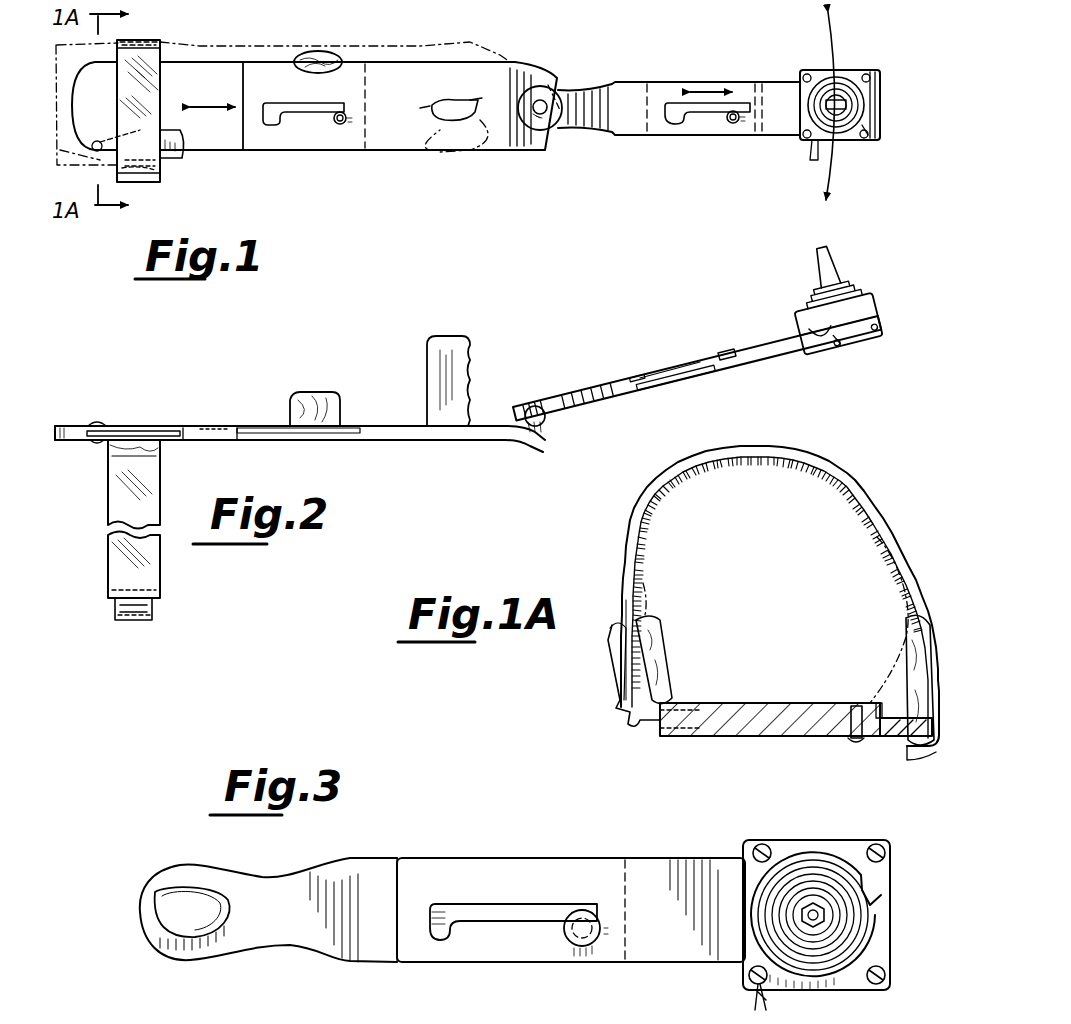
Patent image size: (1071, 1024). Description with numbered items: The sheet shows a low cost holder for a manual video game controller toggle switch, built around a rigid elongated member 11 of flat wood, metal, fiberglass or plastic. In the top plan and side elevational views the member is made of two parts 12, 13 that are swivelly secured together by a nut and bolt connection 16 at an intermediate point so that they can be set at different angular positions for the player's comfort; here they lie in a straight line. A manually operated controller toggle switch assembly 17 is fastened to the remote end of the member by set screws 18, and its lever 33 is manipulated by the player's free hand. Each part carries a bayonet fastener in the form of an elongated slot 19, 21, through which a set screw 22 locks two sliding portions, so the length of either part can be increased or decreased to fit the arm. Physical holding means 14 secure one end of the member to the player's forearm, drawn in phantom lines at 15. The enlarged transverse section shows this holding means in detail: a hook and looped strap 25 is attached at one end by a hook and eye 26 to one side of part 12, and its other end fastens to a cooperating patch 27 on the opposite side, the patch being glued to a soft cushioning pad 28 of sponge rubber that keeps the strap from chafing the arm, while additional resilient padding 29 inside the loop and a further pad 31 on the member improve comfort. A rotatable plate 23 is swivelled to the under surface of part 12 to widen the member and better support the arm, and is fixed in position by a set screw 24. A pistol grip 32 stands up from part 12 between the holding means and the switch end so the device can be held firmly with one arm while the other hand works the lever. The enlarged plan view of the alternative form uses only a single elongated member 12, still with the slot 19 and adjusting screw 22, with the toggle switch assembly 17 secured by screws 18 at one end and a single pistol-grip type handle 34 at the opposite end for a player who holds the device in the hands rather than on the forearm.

In FIG. 1, the rigid elongated member 11 is at (535, 62).
In FIG. 2, the rigid elongated member 11 is at (415, 422).
In FIG. 1A, the rigid elongated member 11 is at (806, 700).
In FIG. 1, the first part of elongated member 12 is at (495, 150).
In FIG. 2, the first part of elongated member 12 is at (412, 432).
In FIG. 1A, the first part of elongated member 12 is at (710, 736).
In FIG. 3, the first part of elongated member 12 is at (300, 872).
In FIG. 1, the second part of elongated member 13 is at (625, 82).
In FIG. 2, the second part of elongated member 13 is at (612, 385).
In FIG. 1, the physical holding means 14 is at (160, 40).
In FIG. 2, the physical holding means 14 is at (105, 532).
In FIG. 1A, the physical holding means 14 is at (822, 465).
In FIG. 1, the forearm of player/operator 15 is at (410, 45).
In FIG. 1A, the forearm of player/operator 15 is at (660, 555).
In FIG. 1, the nut and bolt connection 16 is at (548, 115).
In FIG. 2, the nut and bolt connection 16 is at (548, 424).
In FIG. 1, the controller toggle switch assembly 17 is at (842, 80).
In FIG. 2, the controller toggle switch assembly 17 is at (848, 290).
In FIG. 3, the controller toggle switch assembly 17 is at (814, 860).
In FIG. 1, the set screws 18 is at (805, 72).
In FIG. 3, the set screws 18 is at (870, 850).
In FIG. 1, the bayonet fastener slot 19 is at (288, 120).
In FIG. 2, the bayonet fastener slot 19 is at (310, 438).
In FIG. 3, the bayonet fastener slot 19 is at (464, 918).
In FIG. 1, the bayonet fastener slot 21 is at (688, 122).
In FIG. 2, the bayonet fastener slot 21 is at (700, 368).
In FIG. 1, the set screw 22 is at (348, 120).
In FIG. 2, the set screw 22 is at (722, 345).
In FIG. 1A, the set screw 22 is at (882, 745).
In FIG. 3, the set screw 22 is at (600, 920).
In FIG. 1, the plate 23 is at (178, 160).
In FIG. 2, the plate 23 is at (165, 444).
In FIG. 1, the set screw 24 is at (92, 140).
In FIG. 2, the set screw 24 is at (100, 424).
In FIG. 1A, the set screw 24 is at (852, 745).
In FIG. 1, the hook and looped strap 25 is at (150, 72).
In FIG. 2, the hook and looped strap 25 is at (118, 490).
In FIG. 1A, the hook and looped strap 25 is at (705, 465).
In FIG. 1A, the hook and eye 26 is at (628, 720).
In FIG. 1A, the VELCRO patch 27 is at (918, 672).
In FIG. 1, the cushioning pad 28 is at (148, 186).
In FIG. 1A, the cushioning pad 28 is at (918, 640).
In FIG. 1, the resilient padding 29 is at (140, 42).
In FIG. 1A, the resilient padding 29 is at (662, 640).
In FIG. 1, the resilient padding 31 is at (320, 60).
In FIG. 2, the resilient padding 31 is at (306, 394).
In FIG. 1, the pistol grip 32 is at (448, 108).
In FIG. 2, the pistol grip 32 is at (432, 352).
In FIG. 1, the toggle switch lever 33 is at (846, 102).
In FIG. 2, the toggle switch lever 33 is at (822, 278).
In FIG. 3, the toggle switch lever 33 is at (800, 908).
In FIG. 3, the pistol-grip type handle 34 is at (178, 925).